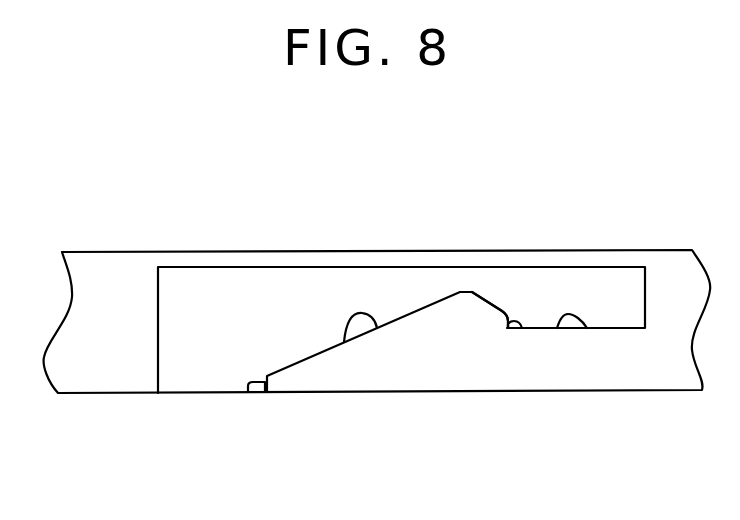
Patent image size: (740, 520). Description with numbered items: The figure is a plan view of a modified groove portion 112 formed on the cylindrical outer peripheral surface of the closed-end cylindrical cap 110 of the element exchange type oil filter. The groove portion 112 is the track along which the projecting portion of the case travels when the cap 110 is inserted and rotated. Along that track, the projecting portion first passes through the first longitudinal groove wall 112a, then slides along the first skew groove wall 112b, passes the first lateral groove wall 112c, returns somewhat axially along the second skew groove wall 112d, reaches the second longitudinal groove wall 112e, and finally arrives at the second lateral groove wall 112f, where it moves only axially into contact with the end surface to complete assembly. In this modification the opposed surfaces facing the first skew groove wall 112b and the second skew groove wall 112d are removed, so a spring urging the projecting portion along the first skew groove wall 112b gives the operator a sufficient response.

The cap 110 is at (113, 258).
The groove portion 112 is at (210, 365).
The first longitudinal groove wall 112a is at (248, 386).
The first skew groove wall 112b is at (344, 342).
The first lateral groove wall 112c is at (467, 294).
The second skew groove wall 112d is at (490, 302).
The second longitudinal groove wall 112e is at (522, 330).
The second lateral groove wall 112f is at (587, 328).